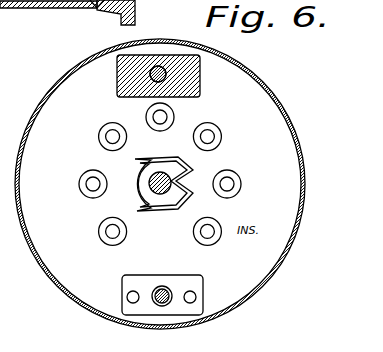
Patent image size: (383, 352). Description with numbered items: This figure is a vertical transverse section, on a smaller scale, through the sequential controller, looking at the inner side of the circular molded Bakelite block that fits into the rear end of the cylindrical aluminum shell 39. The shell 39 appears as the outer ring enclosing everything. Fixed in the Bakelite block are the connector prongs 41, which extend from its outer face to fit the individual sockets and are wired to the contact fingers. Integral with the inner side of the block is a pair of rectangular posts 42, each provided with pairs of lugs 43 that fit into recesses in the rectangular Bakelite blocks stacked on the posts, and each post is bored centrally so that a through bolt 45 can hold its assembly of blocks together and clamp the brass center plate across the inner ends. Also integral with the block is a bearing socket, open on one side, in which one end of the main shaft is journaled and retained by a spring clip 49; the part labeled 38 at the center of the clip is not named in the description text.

The center post 38 is at (143, 173).
The cylindrical aluminum shell 39 is at (295, 236).
The connector prongs 41 is at (209, 228).
The rectangular posts 42 is at (199, 58).
The lugs 43 is at (126, 299).
The through bolt 45 is at (145, 56).
The spring clip 49 is at (193, 170).